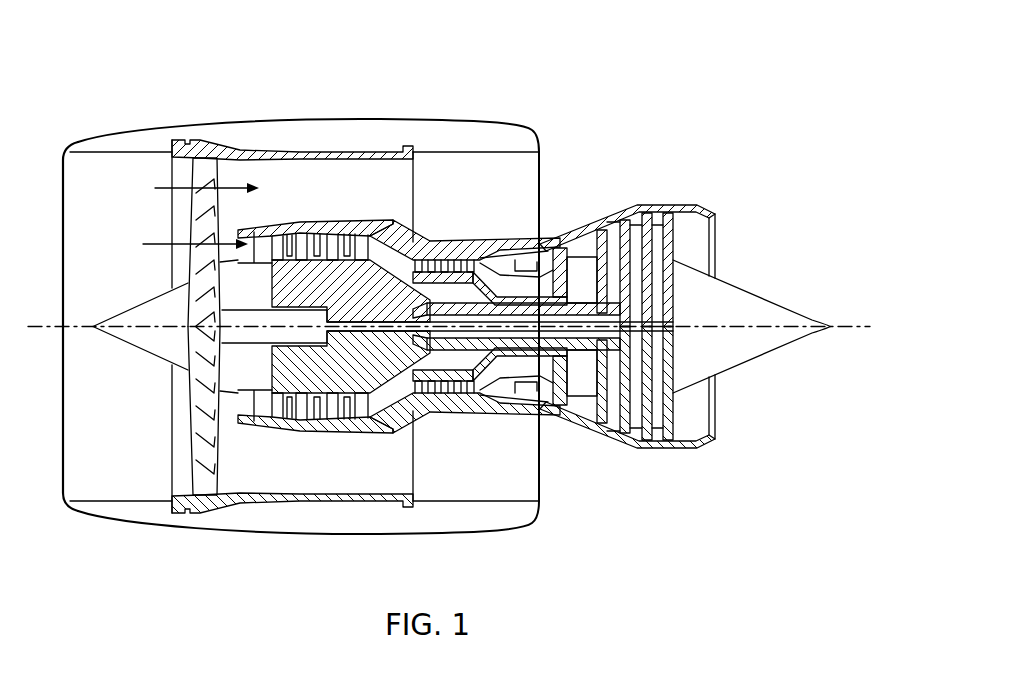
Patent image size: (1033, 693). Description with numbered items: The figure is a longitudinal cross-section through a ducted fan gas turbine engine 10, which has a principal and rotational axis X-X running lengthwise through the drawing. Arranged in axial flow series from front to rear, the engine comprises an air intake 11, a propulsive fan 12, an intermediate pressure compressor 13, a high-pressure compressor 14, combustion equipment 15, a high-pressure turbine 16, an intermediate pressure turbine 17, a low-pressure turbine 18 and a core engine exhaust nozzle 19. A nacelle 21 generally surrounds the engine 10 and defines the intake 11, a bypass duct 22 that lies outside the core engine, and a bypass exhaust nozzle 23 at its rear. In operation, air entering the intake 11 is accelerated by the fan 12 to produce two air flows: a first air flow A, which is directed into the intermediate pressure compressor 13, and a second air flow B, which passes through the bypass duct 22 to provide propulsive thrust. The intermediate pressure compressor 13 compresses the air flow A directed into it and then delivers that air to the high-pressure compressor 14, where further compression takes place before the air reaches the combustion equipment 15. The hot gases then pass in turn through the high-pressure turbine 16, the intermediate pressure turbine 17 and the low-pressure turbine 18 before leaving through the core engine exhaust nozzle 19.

The ducted fan gas turbine engine 10 is at (106, 82).
The air intake 11 is at (112, 153).
The propulsive fan 12 is at (197, 455).
The intermediate pressure compressor 13 is at (340, 416).
The high-pressure compressor 14 is at (458, 244).
The combustion equipment 15 is at (510, 398).
The high-pressure turbine 16 is at (560, 417).
The intermediate pressure turbine 17 is at (598, 229).
The low-pressure turbine 18 is at (612, 433).
The core engine exhaust nozzle 19 is at (709, 212).
The nacelle 21 is at (340, 130).
The bypass duct 22 is at (496, 191).
The bypass exhaust nozzle 23 is at (541, 140).